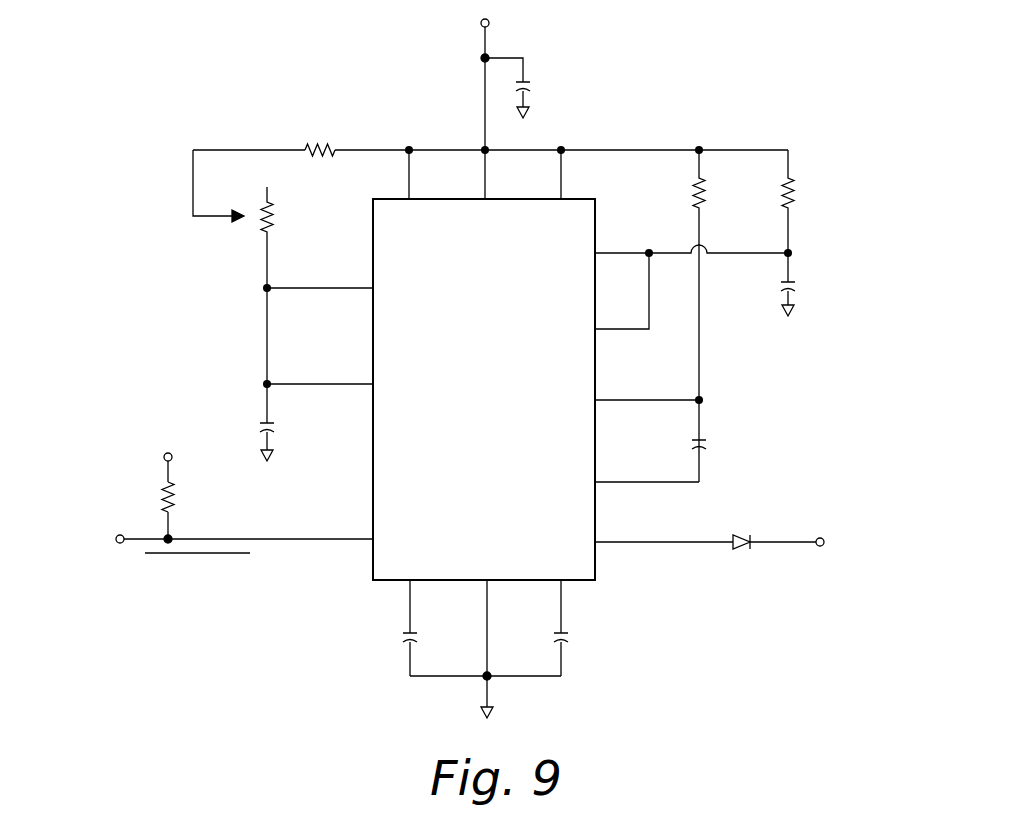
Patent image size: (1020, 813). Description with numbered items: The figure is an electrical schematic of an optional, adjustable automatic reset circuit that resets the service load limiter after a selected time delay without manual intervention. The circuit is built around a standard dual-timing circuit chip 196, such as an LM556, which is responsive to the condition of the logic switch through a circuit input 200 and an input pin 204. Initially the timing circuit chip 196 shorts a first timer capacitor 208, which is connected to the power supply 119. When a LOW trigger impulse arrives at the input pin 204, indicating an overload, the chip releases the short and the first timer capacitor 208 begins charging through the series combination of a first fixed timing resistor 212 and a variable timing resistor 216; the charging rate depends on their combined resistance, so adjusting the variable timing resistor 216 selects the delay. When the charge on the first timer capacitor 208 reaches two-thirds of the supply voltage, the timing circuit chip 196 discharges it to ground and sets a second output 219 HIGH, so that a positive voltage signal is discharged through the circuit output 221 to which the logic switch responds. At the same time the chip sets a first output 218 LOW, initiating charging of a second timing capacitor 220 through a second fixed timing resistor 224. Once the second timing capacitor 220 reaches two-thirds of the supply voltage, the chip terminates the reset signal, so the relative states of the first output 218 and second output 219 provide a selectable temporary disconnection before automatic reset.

The power supply voltage terminal 119 is at (489, 21).
The timing circuit chip 196 is at (373, 455).
The circuit input 200 is at (118, 546).
The input pin 204 is at (372, 545).
The first timer capacitor 208 is at (262, 427).
The first fixed timing resistor 212 is at (318, 140).
The variable timing resistor 216 is at (265, 230).
The first output 218 is at (593, 480).
The second output 219 is at (597, 546).
The second timing capacitor 220 is at (796, 284).
The circuit output 221 is at (825, 540).
The second fixed timing resistor 224 is at (795, 192).